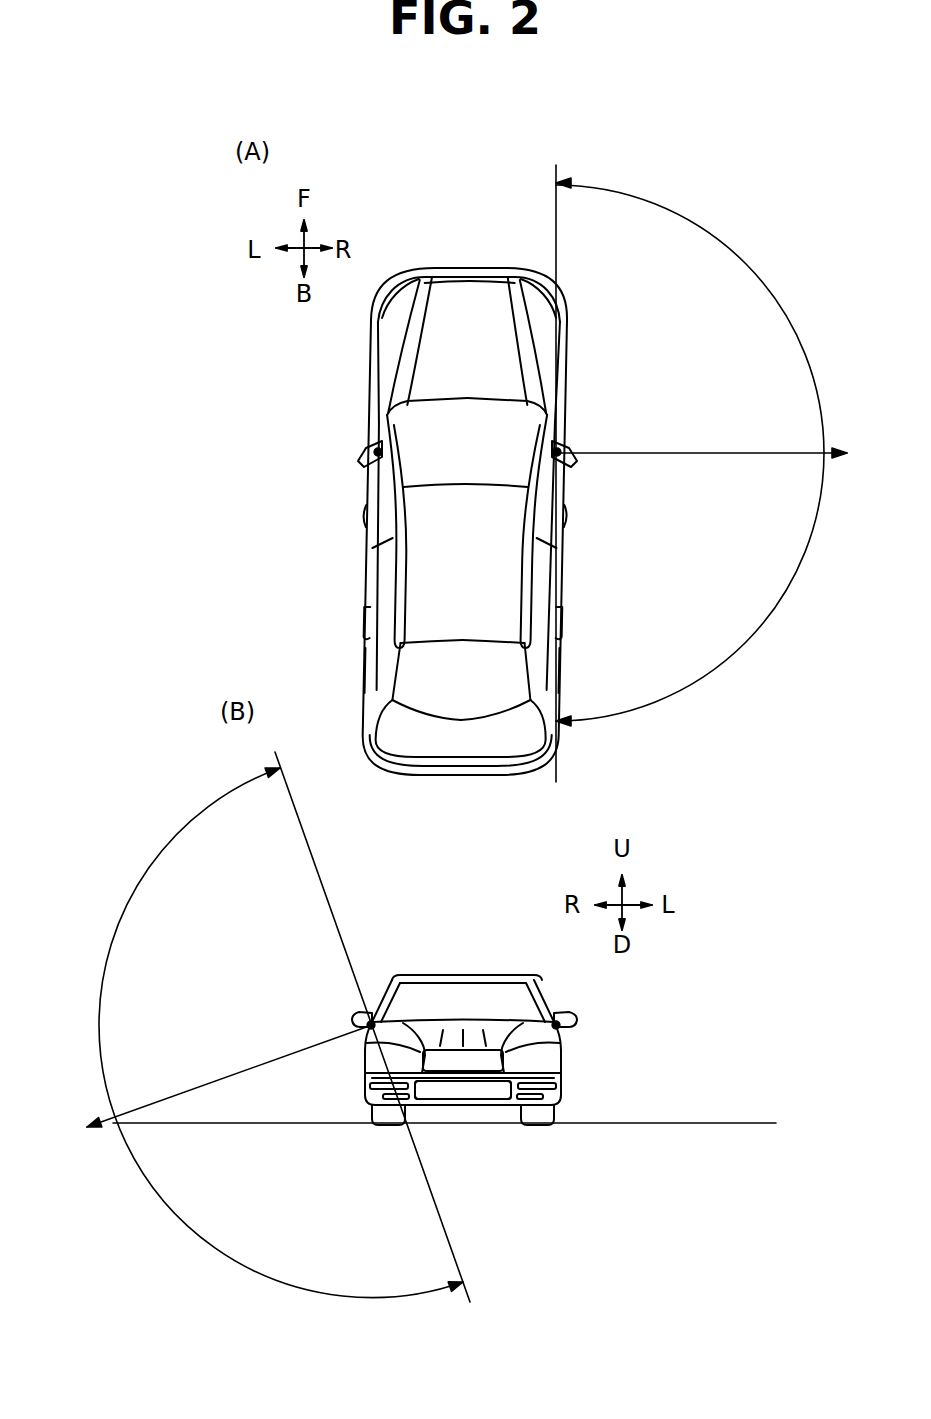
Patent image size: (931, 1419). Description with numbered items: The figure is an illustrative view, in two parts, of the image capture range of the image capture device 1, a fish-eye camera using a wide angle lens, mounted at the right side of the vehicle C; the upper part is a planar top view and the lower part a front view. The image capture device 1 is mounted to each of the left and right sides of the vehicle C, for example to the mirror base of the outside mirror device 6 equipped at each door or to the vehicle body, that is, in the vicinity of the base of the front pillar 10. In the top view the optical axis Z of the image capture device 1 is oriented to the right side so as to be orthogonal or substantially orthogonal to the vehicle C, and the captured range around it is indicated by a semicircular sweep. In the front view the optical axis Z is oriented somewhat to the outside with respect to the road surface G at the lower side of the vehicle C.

The image capture device 1 is at (375, 447).
The outside mirror device 6 is at (365, 458).
The front pillar 10 is at (390, 470).
The vehicle C is at (483, 268).
The optical axis Z is at (748, 452).
The road surface G is at (665, 1122).